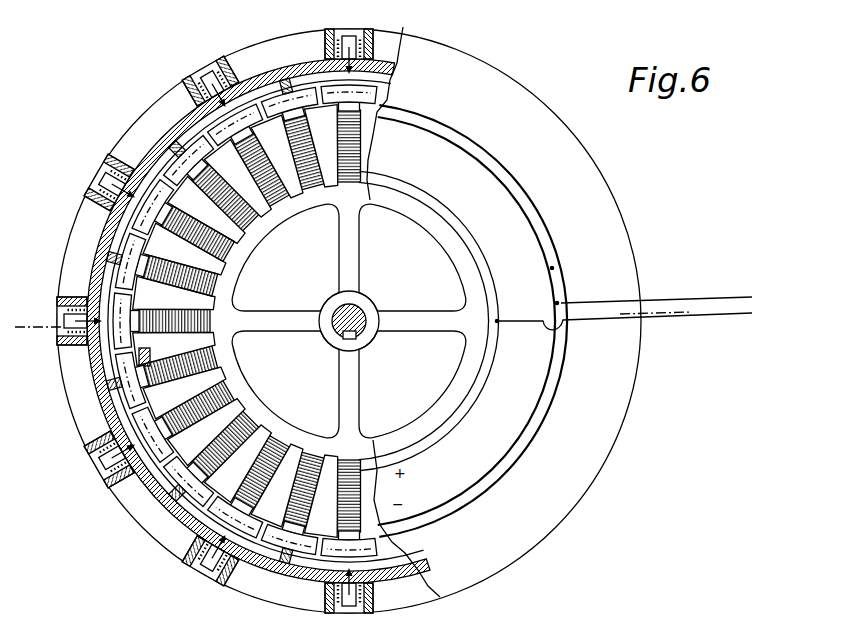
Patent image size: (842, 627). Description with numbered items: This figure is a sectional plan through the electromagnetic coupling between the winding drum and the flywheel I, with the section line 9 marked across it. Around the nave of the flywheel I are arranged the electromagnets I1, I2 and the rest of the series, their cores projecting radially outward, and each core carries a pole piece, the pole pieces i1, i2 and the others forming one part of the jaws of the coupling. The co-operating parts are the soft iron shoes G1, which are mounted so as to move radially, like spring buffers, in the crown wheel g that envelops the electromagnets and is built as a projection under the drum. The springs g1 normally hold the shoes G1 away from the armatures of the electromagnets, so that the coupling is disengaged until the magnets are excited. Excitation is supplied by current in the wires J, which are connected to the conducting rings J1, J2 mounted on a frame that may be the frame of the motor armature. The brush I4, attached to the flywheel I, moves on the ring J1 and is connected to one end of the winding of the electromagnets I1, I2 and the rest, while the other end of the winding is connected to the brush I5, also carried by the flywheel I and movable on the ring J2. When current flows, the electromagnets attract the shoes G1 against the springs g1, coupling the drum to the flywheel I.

The shoe G1 is at (147, 172).
The crown wheel g is at (107, 167).
The spring g1 is at (187, 92).
The pole piece i1 is at (133, 272).
The pole piece i2 is at (148, 218).
The flywheel I is at (297, 317).
The electromagnet I1 is at (213, 279).
The electromagnet I2 is at (237, 250).
The brush I4 is at (213, 327).
The brush I5 is at (145, 357).
The wires J is at (700, 315).
The conducting ring J1 is at (491, 283).
The conducting ring J2 is at (554, 268).
The section line 9- 9 is at (353, 332).